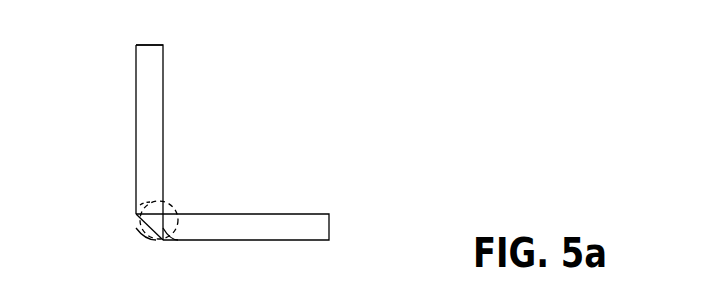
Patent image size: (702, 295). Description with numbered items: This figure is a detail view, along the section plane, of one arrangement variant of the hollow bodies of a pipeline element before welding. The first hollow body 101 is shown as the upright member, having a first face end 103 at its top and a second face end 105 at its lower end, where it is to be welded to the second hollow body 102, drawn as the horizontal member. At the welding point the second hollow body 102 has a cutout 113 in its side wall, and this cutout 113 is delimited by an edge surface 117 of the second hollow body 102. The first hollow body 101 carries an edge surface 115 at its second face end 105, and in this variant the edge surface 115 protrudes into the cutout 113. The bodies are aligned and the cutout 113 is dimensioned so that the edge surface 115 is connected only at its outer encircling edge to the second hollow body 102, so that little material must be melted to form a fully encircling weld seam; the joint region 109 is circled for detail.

The first hollow body 101 is at (135, 100).
The second hollow body 102 is at (322, 213).
The first face end 103 is at (148, 44).
The second face end 105 is at (147, 198).
The joint region 109 is at (178, 206).
The cutout 113 is at (137, 233).
The edge surface 115 is at (136, 228).
The edge surface 117 is at (171, 232).